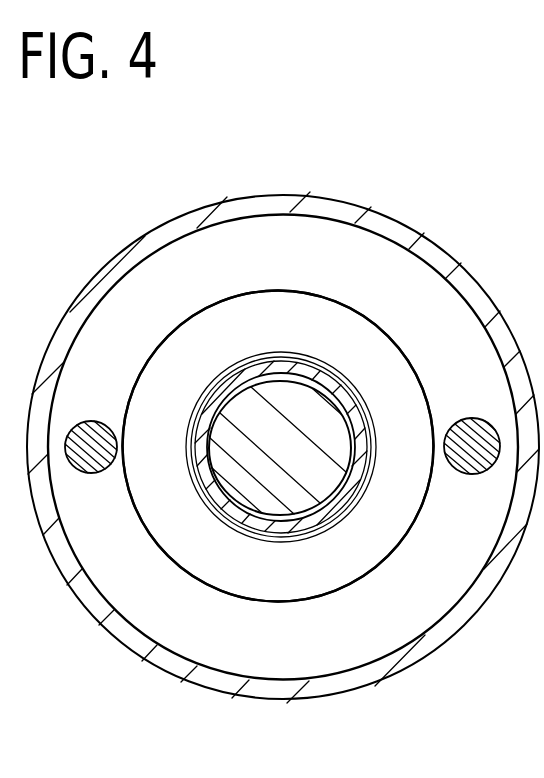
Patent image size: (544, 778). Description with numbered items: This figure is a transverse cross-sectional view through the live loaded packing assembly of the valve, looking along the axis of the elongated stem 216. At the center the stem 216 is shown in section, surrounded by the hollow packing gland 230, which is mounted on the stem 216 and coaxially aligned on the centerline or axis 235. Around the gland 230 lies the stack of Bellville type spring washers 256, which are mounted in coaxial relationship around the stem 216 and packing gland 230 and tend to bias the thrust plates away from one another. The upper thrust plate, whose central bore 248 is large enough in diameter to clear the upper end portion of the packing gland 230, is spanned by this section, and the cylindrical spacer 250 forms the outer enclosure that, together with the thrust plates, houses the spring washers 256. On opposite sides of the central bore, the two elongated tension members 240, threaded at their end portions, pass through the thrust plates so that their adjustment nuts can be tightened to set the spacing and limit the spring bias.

The elongated stem 216 is at (292, 438).
The packing gland 230 is at (349, 381).
The stop face 235 is at (310, 650).
The tension members 240 is at (90, 462).
The central bore 248 is at (229, 378).
The cylindrical spacer 250 is at (441, 247).
The spring washers 256 is at (307, 580).